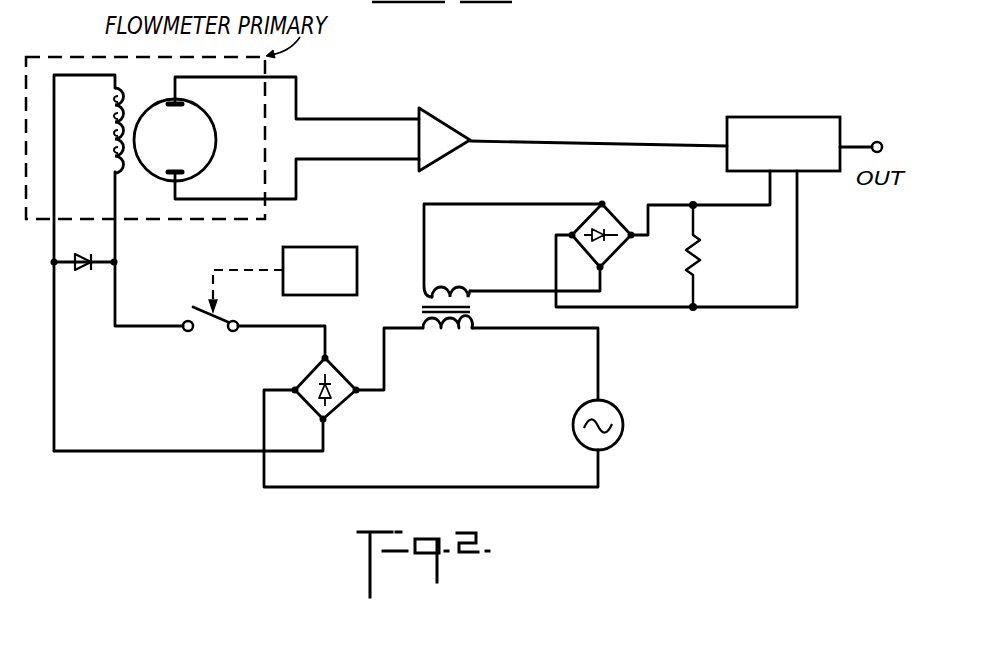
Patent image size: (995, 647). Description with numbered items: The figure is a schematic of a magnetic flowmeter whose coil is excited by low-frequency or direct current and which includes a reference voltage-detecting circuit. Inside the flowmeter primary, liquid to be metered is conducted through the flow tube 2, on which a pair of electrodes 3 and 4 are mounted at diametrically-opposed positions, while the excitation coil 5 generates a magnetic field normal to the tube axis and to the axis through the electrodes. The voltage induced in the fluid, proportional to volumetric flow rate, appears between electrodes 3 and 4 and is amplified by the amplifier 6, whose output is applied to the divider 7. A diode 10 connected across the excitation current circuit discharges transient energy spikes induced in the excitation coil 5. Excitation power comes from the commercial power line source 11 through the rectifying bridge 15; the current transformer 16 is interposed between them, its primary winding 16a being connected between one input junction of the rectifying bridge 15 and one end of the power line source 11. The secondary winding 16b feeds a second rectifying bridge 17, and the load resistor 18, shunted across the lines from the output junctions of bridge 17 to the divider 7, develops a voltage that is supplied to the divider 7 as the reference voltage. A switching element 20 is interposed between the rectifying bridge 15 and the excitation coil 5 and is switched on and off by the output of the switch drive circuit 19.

The flow tube 2 is at (163, 99).
The electrode 3 is at (176, 108).
The electrode 4 is at (177, 167).
The excitation coil 5 is at (108, 136).
The amplifier 6 is at (443, 120).
The divider 7 is at (803, 117).
The diode 10 is at (82, 276).
The commercial power line source 11 is at (623, 416).
The rectifying bridge 15 is at (345, 407).
The current transformer 16 is at (413, 308).
The primary winding 16a is at (443, 346).
The secondary winding 16b is at (463, 284).
The rectifying bridge 17 is at (617, 250).
The load resistor 18 is at (704, 259).
The switch drive circuit 19 is at (352, 247).
The switching element 20 is at (212, 337).